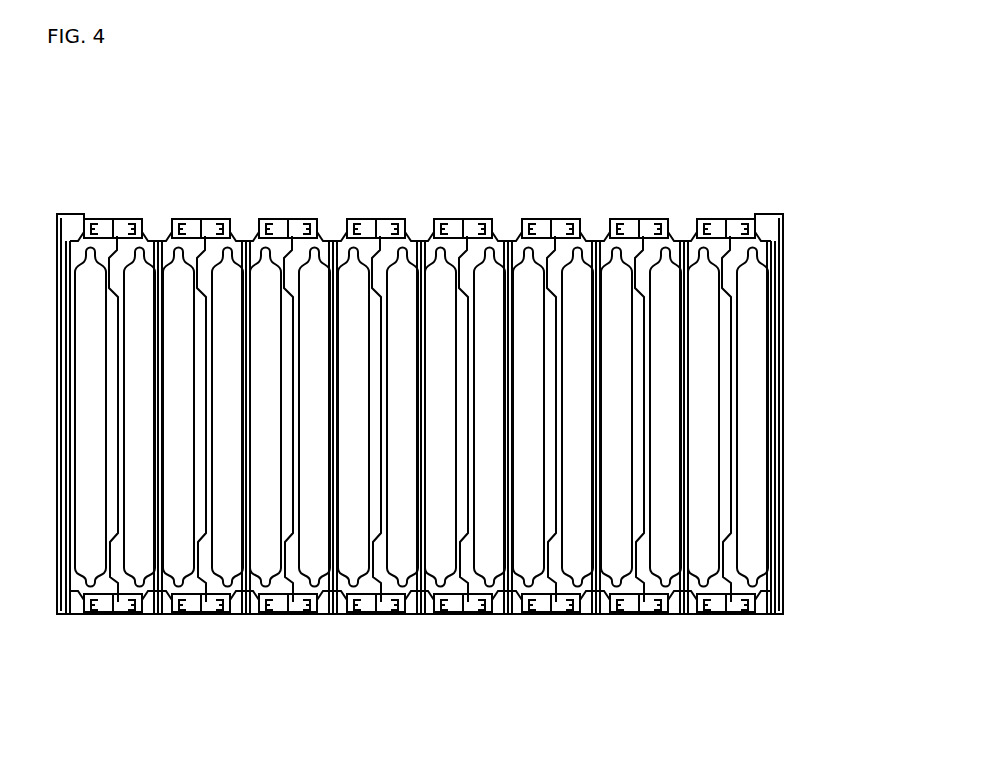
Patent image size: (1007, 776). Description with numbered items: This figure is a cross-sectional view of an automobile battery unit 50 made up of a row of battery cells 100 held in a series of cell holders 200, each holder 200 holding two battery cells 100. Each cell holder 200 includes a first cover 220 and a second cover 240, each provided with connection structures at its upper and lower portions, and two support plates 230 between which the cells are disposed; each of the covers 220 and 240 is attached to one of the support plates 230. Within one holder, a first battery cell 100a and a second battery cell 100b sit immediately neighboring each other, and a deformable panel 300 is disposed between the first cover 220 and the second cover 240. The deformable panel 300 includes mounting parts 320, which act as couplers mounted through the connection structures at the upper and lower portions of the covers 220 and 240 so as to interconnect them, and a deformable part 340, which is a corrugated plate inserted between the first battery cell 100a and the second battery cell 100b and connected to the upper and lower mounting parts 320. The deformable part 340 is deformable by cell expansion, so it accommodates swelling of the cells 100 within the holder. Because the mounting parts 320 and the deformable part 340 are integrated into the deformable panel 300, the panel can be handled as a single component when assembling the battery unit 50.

The automobile battery unit 50 is at (637, 193).
The battery cell 100 is at (173, 553).
The first battery cell 100a is at (353, 290).
The second battery cell 100b is at (402, 300).
The cell holder 200 is at (433, 128).
The first cover 220 is at (352, 220).
The support plate 230 is at (330, 612).
The second cover 240 is at (397, 220).
The deformable panel 300 is at (192, 247).
The mounting part 320 is at (110, 230).
The deformable part 340 is at (201, 488).